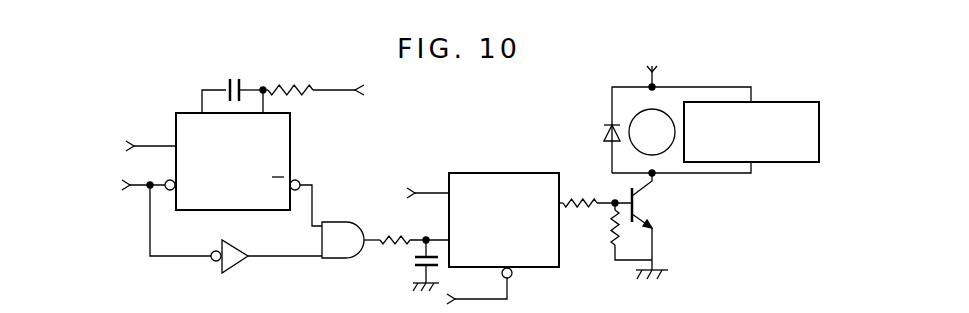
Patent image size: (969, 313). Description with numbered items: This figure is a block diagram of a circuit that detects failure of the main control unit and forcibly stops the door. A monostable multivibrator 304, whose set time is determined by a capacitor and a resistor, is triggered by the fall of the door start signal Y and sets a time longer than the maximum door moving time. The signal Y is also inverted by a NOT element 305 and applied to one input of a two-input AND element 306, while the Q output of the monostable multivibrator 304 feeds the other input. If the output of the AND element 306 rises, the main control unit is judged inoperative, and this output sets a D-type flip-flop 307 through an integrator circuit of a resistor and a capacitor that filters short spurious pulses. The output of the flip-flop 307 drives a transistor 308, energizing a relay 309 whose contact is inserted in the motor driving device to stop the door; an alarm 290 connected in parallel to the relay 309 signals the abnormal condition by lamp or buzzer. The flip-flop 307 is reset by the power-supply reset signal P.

The monostable multivibrator 304 is at (290, 146).
The NOT element 305 is at (241, 268).
The 2-input AND element 306 is at (340, 260).
The D-type flip-flop 307 is at (490, 173).
The transistor 308 is at (648, 196).
The relay 309 is at (631, 118).
The alarm 290 is at (778, 102).